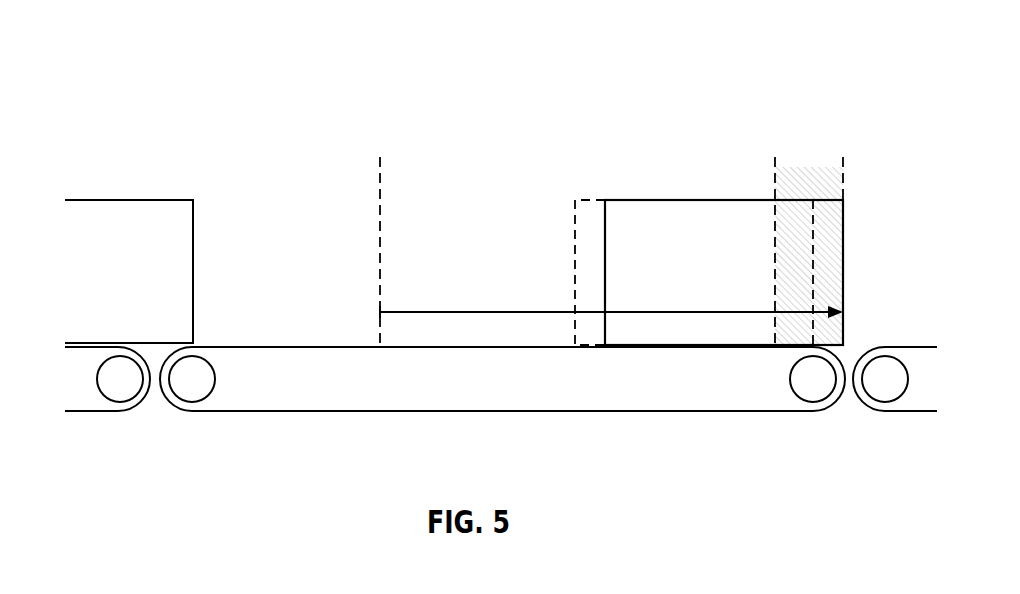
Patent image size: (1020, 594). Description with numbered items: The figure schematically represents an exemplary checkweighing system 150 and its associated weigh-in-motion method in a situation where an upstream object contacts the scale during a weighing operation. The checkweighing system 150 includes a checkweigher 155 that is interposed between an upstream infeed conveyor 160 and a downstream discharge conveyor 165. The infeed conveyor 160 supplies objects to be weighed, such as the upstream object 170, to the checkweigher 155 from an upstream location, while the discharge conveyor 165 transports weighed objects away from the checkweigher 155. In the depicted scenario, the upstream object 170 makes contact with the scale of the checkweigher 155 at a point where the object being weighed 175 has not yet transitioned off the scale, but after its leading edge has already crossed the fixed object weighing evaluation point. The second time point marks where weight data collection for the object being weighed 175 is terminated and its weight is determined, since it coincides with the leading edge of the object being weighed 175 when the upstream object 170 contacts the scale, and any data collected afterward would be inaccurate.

The checkweighing system 150 is at (237, 65).
The checkweigher 155 is at (296, 427).
The upstream infeed conveyor 160 is at (102, 407).
The downstream discharge conveyor 165 is at (900, 407).
The upstream object 170 is at (137, 217).
The object being weighed 175 is at (635, 215).